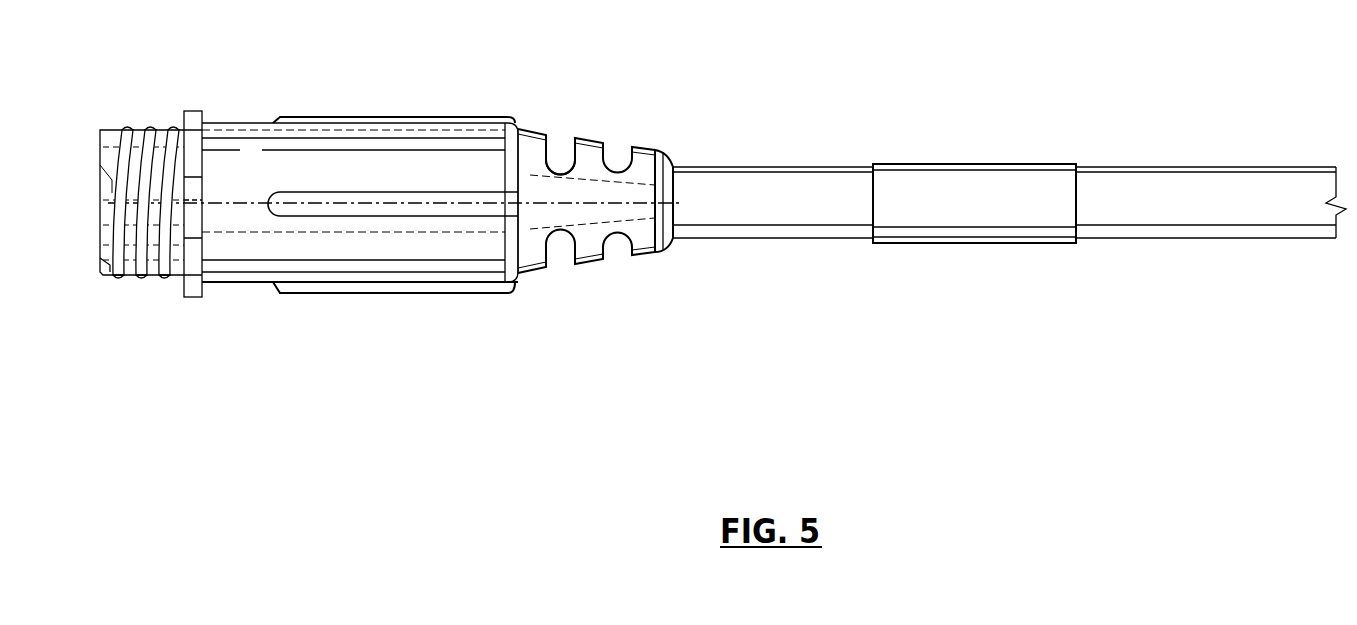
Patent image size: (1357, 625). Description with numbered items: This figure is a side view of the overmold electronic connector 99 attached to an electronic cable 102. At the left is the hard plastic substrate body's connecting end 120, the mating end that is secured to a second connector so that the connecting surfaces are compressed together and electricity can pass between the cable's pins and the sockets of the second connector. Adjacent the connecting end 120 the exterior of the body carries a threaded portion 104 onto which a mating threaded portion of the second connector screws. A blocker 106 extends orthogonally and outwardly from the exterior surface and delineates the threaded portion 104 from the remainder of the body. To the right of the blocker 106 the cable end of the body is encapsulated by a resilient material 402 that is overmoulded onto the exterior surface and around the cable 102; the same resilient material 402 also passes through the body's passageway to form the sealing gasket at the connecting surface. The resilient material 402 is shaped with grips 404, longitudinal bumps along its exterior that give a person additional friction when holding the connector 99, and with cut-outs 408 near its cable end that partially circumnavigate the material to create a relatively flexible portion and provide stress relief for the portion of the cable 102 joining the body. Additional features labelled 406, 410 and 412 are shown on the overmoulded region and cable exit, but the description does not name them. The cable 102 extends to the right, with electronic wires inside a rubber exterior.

The electronic connector 99 is at (370, 418).
The electronic cable 102 is at (1080, 205).
The threaded portion 104 is at (138, 285).
The blocker 106 is at (197, 105).
The connecting end 120 is at (96, 158).
The resilient material 402 is at (355, 255).
The grips 404 is at (368, 117).
The strain relief 406 is at (530, 240).
The cut-outs 408 is at (563, 148).
The body edge 410 is at (214, 287).
The end cap 412 is at (665, 252).